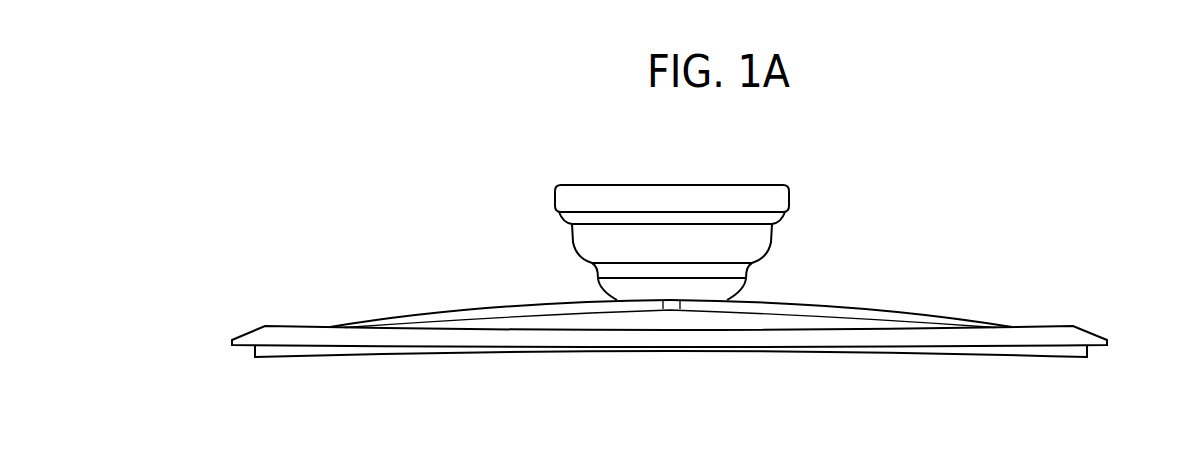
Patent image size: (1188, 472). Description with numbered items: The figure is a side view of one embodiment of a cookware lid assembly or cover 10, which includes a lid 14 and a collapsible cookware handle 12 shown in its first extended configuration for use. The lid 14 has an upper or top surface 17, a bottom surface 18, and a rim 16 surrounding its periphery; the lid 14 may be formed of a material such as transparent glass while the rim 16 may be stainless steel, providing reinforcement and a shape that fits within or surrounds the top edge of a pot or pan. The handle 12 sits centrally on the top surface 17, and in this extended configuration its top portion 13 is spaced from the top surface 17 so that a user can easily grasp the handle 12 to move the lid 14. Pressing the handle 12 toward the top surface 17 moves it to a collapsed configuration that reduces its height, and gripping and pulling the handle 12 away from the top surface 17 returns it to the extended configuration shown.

The cookware lid assembly 10 is at (1120, 103).
The collapsible cookware handle 12 is at (617, 148).
The top portion 13 is at (790, 197).
The lid 14 is at (958, 277).
The rim 16 is at (1105, 340).
The top surface 17 is at (493, 307).
The bottom surface 18 is at (802, 351).